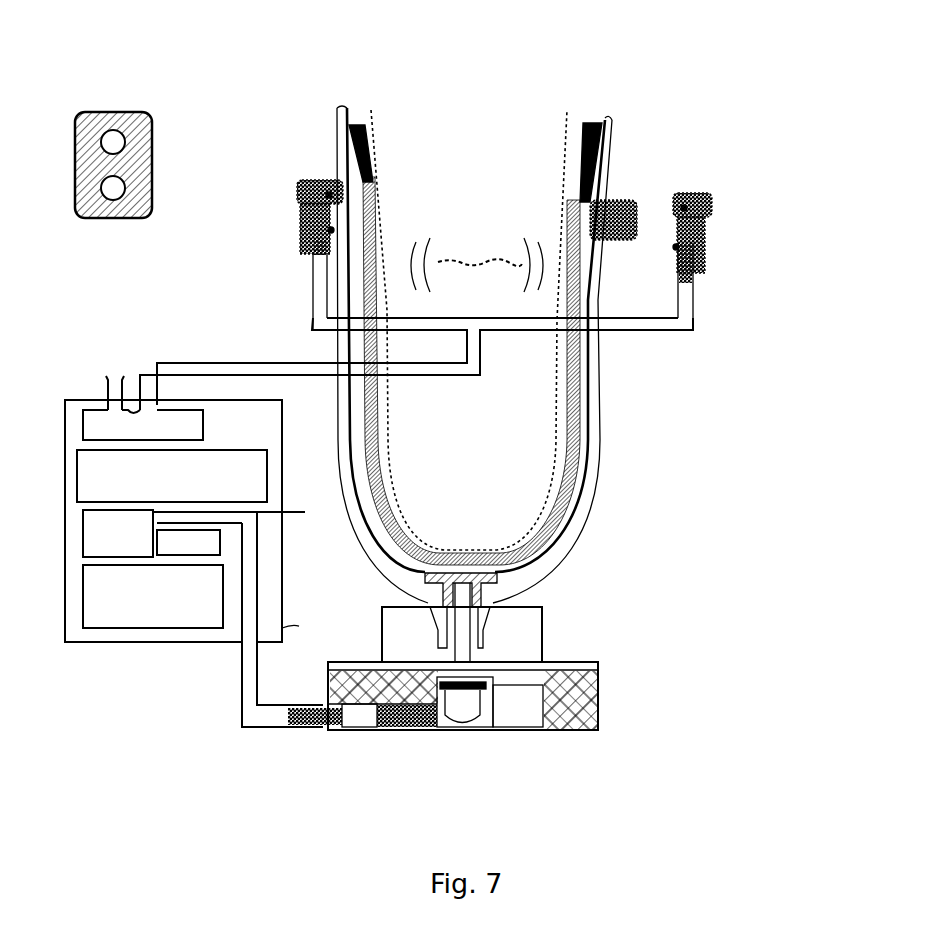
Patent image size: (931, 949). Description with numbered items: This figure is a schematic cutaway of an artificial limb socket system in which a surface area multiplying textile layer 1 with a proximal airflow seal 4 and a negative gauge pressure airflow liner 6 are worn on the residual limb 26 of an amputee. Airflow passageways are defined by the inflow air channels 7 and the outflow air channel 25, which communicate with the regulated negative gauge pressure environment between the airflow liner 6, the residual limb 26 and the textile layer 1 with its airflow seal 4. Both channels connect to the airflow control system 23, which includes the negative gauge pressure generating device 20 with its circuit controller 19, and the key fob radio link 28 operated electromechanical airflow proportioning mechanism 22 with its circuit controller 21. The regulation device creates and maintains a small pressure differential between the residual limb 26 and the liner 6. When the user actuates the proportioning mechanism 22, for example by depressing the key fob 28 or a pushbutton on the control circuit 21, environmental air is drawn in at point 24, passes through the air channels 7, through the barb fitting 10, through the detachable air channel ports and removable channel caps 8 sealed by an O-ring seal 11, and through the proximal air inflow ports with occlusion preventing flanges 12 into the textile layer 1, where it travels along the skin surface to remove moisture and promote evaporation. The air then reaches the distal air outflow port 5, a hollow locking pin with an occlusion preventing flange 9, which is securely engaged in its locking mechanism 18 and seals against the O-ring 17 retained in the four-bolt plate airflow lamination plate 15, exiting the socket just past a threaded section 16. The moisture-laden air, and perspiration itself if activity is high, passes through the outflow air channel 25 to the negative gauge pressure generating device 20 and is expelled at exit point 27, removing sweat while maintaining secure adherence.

The surface area multiplying textile layer 1 is at (569, 528).
The airflow seal 4 is at (338, 110).
The distal air outflow port 5 is at (473, 652).
The negative gauge pressure airflow liner 6 is at (603, 472).
The inflow air channel 7 is at (495, 325).
The detachable air channel ports and removable channel caps 8 is at (300, 216).
The occlusion preventing flange 9 is at (497, 583).
The barb fitting 10 is at (312, 267).
The O-ring seal 11 is at (328, 195).
The proximal air inflow ports with occlusion preventing flanges 12 is at (600, 207).
The four-bolt plate airflow lamination plate 15 is at (600, 697).
The threaded section 16 is at (342, 727).
The O-ring 17 is at (470, 690).
The locking mechanism 18 is at (528, 615).
The circuit controller 19 is at (143, 630).
The negative gauge pressure generating device 20 is at (83, 528).
The circuit controller 21 is at (267, 470).
The electromechanical airflow proportioning mechanism 22 is at (183, 410).
The airflow control system 23 is at (311, 628).
The point 24 is at (113, 380).
The outflow air channel 25 is at (238, 712).
The residual limb 26 is at (504, 138).
The exit point 27 is at (303, 512).
The key fob radio link 28 is at (108, 222).